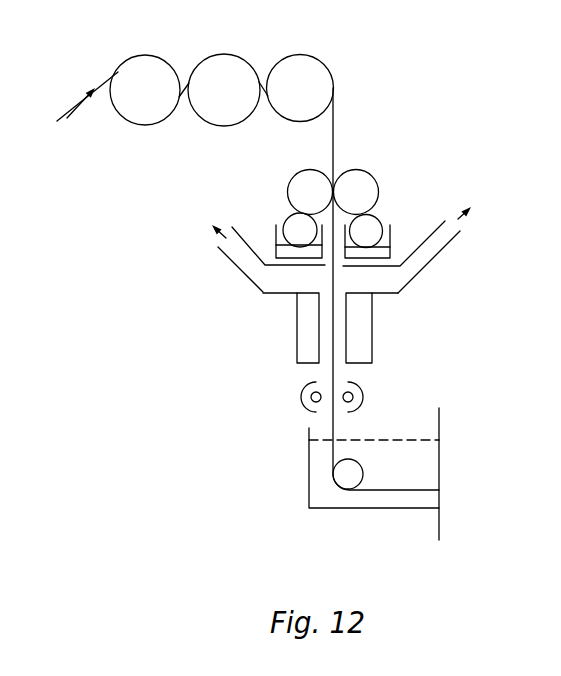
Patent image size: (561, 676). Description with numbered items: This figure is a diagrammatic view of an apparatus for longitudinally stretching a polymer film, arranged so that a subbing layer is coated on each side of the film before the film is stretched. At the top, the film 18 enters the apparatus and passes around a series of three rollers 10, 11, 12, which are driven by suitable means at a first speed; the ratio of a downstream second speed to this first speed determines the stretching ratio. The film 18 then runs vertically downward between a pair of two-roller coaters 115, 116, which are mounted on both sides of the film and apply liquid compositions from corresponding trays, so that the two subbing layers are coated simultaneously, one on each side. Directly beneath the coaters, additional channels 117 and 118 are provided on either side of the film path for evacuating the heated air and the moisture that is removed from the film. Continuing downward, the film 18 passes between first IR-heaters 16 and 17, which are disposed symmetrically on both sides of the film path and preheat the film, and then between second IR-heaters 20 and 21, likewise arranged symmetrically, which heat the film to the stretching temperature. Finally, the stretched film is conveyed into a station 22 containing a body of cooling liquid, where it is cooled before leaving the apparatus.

The roller 10 is at (152, 70).
The roller 11 is at (227, 75).
The roller 12 is at (303, 70).
The film 18 is at (333, 133).
The two-roller coater 115 is at (276, 226).
The two-roller coater 116 is at (393, 222).
The channel 117 is at (257, 273).
The channel 118 is at (417, 263).
The first IR-heater 16 is at (307, 331).
The first IR-heater 17 is at (362, 336).
The second IR-heater 20 is at (305, 395).
The second IR-heater 21 is at (362, 397).
The station 22 is at (298, 488).